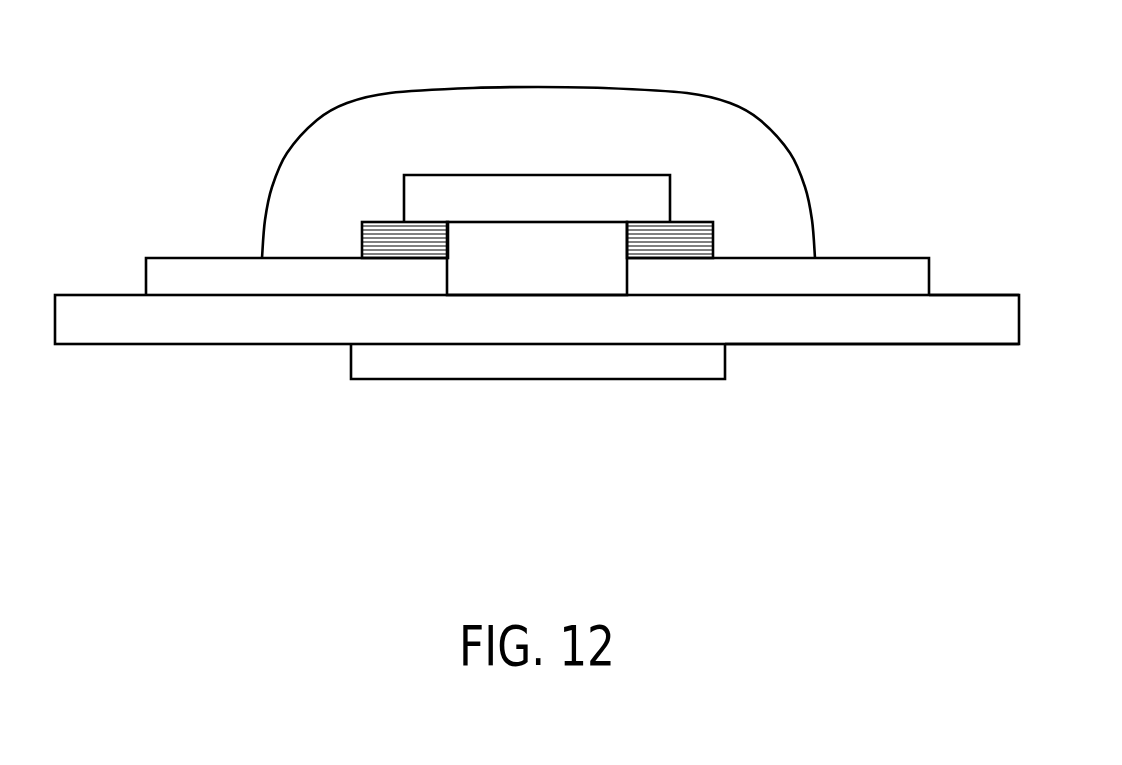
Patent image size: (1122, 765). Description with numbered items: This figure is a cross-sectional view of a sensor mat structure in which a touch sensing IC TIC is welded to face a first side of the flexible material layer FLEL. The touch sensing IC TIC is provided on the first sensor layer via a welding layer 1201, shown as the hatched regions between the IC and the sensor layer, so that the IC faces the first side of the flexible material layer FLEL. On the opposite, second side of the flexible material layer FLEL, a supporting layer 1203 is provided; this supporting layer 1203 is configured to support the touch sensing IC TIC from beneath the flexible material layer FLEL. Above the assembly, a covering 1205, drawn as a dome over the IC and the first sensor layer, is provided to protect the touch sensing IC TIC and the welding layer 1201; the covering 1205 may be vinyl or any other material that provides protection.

The welding layer 1201 is at (385, 232).
The supporting layer 1203 is at (517, 368).
The covering 1205 is at (535, 88).
The touch sensing IC TIC is at (537, 235).
The flexible material layer FLEL is at (1007, 320).